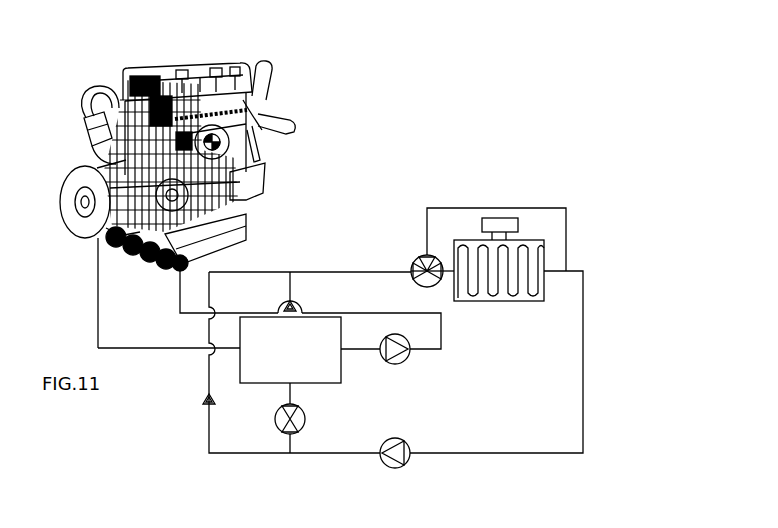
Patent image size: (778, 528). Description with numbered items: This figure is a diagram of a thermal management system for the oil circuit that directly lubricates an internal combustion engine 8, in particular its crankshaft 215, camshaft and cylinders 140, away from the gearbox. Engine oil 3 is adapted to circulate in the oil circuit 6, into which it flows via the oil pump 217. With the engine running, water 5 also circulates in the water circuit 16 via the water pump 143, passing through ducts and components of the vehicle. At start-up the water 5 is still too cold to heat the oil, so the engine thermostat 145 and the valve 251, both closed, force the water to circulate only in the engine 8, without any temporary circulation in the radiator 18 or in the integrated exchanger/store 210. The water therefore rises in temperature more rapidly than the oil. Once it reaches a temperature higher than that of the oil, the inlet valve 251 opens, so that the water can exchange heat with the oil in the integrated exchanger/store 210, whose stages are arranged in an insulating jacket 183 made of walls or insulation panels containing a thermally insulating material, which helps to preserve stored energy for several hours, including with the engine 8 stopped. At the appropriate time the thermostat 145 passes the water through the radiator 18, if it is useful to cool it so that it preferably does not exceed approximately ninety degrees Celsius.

The engine oil 3 is at (168, 351).
The water 5 is at (140, 252).
The oil circuit 6 is at (98, 300).
The internal combustion engine 8 is at (313, 162).
The water circuit 16 is at (607, 373).
The radiator 18 is at (538, 250).
The cylinders 140 is at (122, 128).
The water pump 143 is at (409, 448).
The engine thermostat 145 is at (412, 257).
The insulating jacket 183 is at (343, 377).
The integrated exchanger/store 210 is at (258, 388).
The crankshaft 215 is at (209, 208).
The oil pump 217 is at (405, 360).
The inlet valve 251 is at (306, 421).